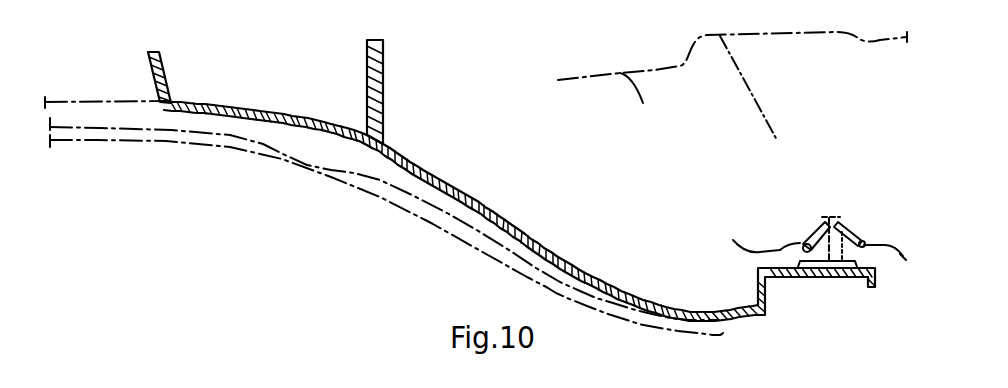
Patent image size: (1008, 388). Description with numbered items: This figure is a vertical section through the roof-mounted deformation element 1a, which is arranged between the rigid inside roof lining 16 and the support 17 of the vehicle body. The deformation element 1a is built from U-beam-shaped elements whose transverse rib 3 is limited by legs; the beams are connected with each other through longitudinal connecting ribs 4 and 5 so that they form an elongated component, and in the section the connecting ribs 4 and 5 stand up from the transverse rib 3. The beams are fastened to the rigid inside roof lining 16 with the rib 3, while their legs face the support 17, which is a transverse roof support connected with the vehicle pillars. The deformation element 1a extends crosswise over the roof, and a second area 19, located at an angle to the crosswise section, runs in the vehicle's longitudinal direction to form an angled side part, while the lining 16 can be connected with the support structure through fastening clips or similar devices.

The deformation element 1a is at (483, 102).
The transverse rib 3 is at (468, 202).
The longitudinal connecting rib 4 is at (163, 72).
The longitudinal connecting rib 5 is at (386, 98).
The rigid inside roof lining 16 is at (308, 165).
The support 17 is at (727, 230).
The second area 19 is at (858, 229).